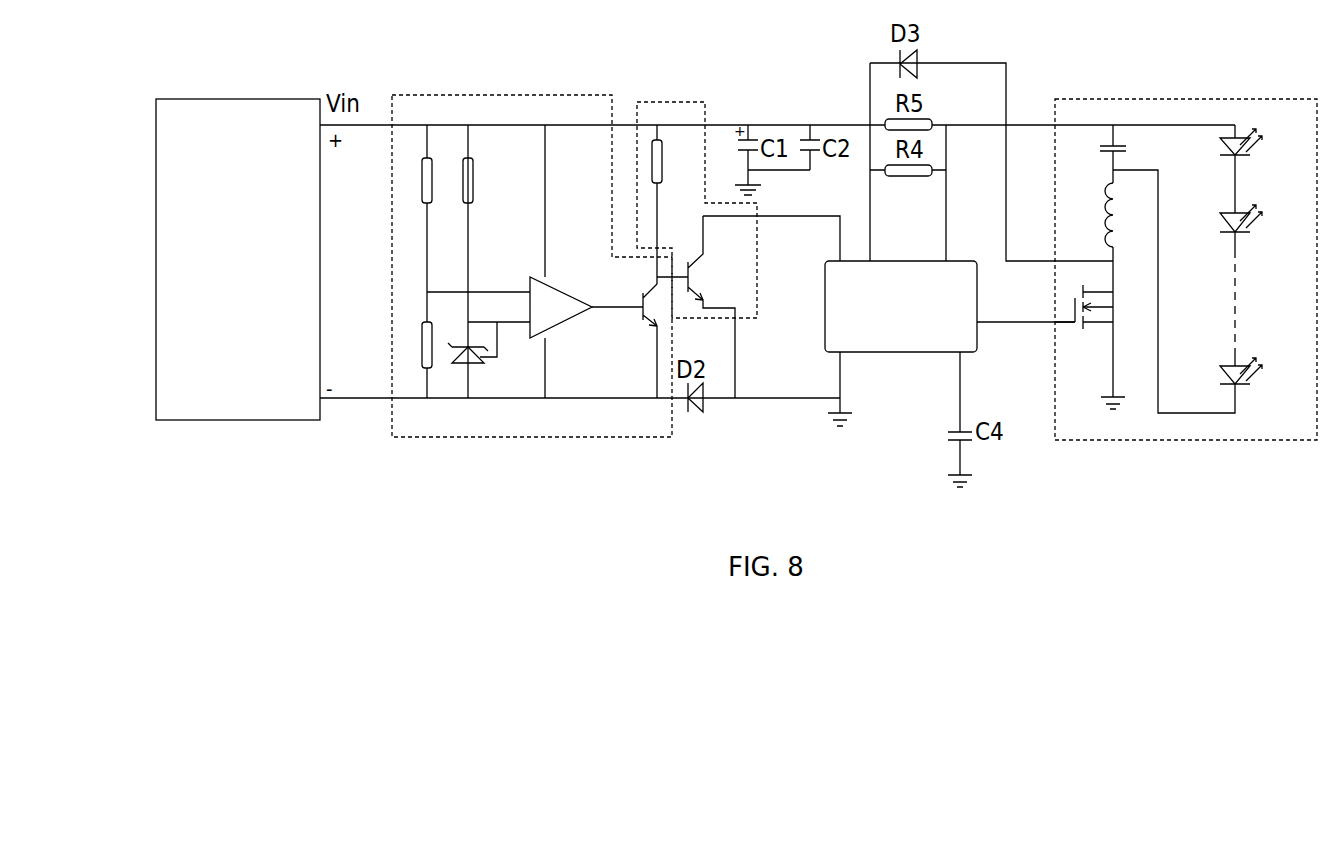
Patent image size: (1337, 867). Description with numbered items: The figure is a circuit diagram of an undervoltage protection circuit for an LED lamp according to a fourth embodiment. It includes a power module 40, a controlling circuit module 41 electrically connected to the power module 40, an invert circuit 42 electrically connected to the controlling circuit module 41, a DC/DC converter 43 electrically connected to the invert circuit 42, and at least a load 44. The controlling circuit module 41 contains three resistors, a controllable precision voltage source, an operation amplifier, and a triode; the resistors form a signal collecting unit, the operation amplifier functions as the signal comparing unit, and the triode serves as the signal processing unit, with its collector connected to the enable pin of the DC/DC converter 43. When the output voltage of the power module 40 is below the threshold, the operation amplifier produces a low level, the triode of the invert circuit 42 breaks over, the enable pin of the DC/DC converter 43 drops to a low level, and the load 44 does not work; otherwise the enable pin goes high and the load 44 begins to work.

The power module 40 is at (232, 99).
The controlling circuit module 41 is at (482, 95).
The invert circuit 42 is at (667, 102).
The DC/DC converter 43 is at (908, 352).
The load 44 is at (1130, 99).